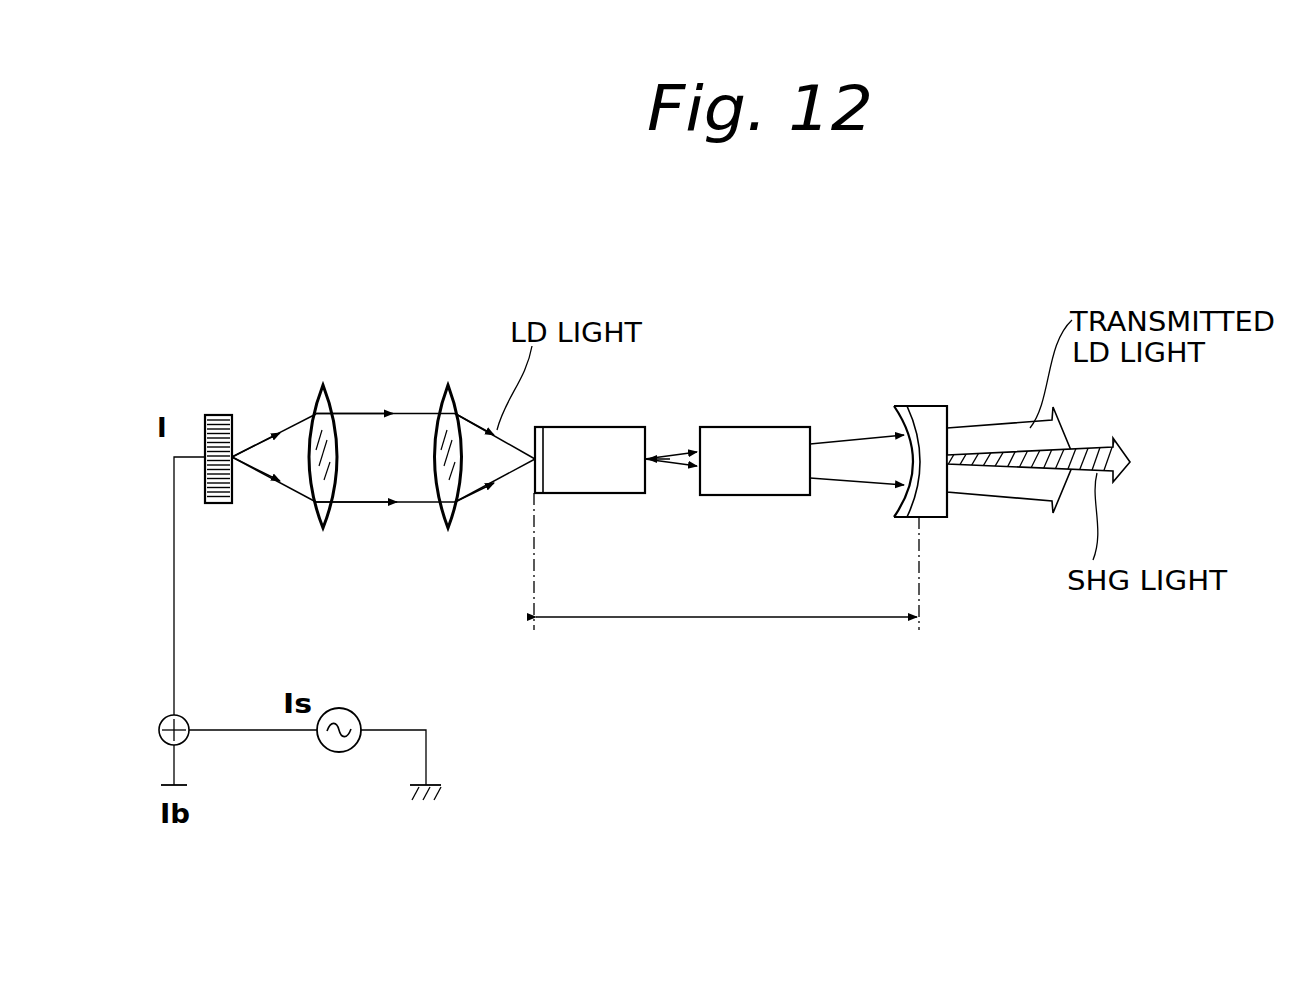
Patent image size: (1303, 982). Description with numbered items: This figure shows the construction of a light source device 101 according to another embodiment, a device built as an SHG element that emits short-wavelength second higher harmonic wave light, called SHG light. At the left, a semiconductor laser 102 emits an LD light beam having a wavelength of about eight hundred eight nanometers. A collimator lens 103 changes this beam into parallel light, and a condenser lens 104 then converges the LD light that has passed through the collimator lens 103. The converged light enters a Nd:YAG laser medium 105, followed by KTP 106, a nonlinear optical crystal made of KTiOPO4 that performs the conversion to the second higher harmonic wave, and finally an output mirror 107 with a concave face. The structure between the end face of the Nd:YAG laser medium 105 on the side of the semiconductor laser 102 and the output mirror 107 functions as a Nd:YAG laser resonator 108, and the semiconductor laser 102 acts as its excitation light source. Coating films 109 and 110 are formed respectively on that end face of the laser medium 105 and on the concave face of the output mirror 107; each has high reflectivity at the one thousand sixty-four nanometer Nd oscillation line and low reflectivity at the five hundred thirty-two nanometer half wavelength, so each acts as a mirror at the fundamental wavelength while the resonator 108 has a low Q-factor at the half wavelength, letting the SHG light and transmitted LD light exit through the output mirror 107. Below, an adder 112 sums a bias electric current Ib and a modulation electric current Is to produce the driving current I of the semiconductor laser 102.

The light source device 101 is at (717, 330).
The semiconductor laser 102 is at (219, 415).
The collimator lens 103 is at (325, 395).
The condenser lens 104 is at (443, 396).
The Nd:YAG laser medium 105 is at (594, 463).
The KTP 106 is at (777, 432).
The output mirror 107 is at (915, 457).
The Nd:YAG laser resonator 108 is at (726, 561).
The coating film 109 is at (538, 494).
The coating film 110 is at (898, 513).
The adder 112 is at (185, 717).